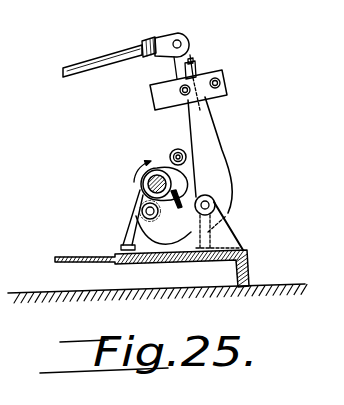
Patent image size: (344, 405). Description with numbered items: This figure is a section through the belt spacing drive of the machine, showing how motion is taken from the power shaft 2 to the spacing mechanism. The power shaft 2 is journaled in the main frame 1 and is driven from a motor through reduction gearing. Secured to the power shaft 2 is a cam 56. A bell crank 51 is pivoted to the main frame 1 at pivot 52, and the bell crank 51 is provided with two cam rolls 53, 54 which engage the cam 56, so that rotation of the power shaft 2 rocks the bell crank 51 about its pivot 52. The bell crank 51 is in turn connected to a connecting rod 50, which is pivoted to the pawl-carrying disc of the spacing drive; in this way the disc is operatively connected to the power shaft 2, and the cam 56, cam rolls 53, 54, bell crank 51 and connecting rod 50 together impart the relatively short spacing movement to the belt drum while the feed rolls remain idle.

The main frame 1 is at (247, 254).
The power shaft 2 is at (157, 184).
The connecting rod 50 is at (100, 58).
The bell crank 51 is at (197, 120).
The pivot 52 is at (216, 203).
The cam roll 53 is at (140, 214).
The cam roll 54 is at (178, 150).
The cam 56 is at (166, 170).